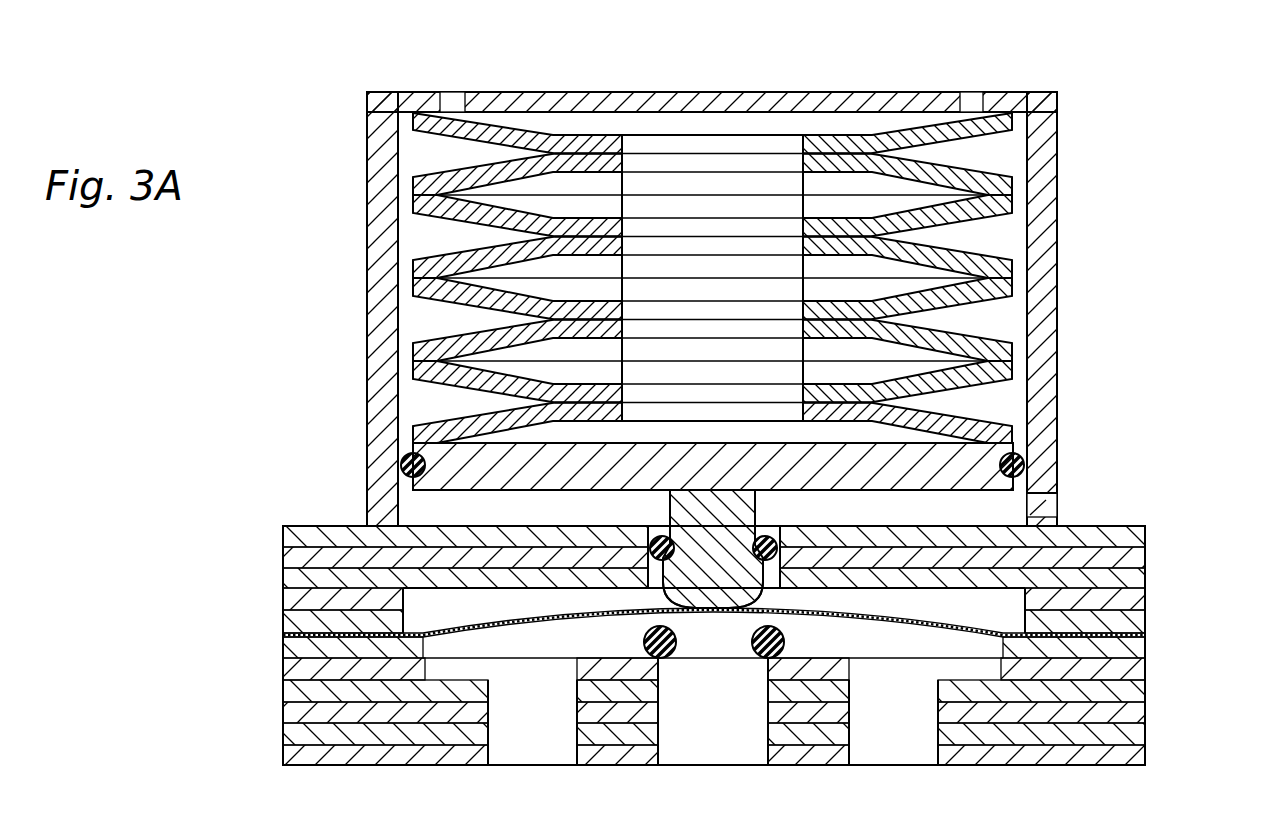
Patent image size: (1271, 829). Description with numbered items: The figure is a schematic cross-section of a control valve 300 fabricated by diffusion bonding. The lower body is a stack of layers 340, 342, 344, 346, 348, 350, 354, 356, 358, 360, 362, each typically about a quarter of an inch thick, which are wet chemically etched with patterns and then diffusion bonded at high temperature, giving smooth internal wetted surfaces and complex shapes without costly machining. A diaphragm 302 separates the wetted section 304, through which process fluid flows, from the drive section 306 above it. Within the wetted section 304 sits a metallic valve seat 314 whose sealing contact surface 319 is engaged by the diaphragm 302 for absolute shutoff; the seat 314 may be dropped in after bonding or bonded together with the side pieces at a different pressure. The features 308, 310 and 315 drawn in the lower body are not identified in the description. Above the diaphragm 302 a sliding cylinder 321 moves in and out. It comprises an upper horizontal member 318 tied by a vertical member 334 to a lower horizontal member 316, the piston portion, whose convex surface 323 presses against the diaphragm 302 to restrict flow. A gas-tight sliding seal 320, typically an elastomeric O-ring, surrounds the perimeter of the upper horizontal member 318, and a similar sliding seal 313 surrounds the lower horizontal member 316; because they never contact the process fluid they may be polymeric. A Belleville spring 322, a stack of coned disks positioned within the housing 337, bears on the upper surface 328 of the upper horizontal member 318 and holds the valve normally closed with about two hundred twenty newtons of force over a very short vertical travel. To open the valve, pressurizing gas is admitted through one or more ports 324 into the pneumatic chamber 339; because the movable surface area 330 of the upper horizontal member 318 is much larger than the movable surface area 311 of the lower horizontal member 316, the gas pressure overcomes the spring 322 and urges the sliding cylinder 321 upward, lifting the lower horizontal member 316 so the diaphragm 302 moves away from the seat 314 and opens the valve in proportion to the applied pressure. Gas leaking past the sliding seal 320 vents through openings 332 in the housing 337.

The control valve 300 is at (1158, 110).
The diaphragm 302 is at (800, 610).
The wetted section 304 is at (614, 630).
The drive section 306 is at (415, 318).
The fluid channel 308 is at (531, 758).
The central channel 310 is at (691, 758).
The movable surface area of lower horizontal member 311 is at (765, 536).
The sliding seal 313 is at (660, 536).
The valve seat 314 is at (785, 645).
The lower chamber 315 is at (578, 667).
The lower horizontal member 316 is at (739, 594).
The upper horizontal member 318 is at (600, 475).
The sealing contact surface 319 is at (657, 627).
The sliding seal 320 is at (400, 462).
The sliding cylinder 321 is at (696, 467).
The spring 322 is at (797, 278).
The convex surface 323 is at (714, 556).
The port 324 is at (1052, 504).
The upper surface of upper horizontal member 328 is at (947, 424).
The movable surface area of upper horizontal member 330 is at (450, 490).
The opening 332 is at (452, 90).
The vertical member 334 is at (731, 511).
The housing 337 is at (716, 92).
The pneumatic chamber 339 is at (988, 512).
The layer 340 is at (285, 755).
The layer 342 is at (285, 733).
The layer 344 is at (285, 713).
The layer 346 is at (285, 692).
The layer 348 is at (285, 670).
The layer 350 is at (285, 645).
The layer 354 is at (285, 625).
The layer 356 is at (285, 600).
The layer 358 is at (285, 578).
The layer 360 is at (285, 553).
The layer 362 is at (285, 532).